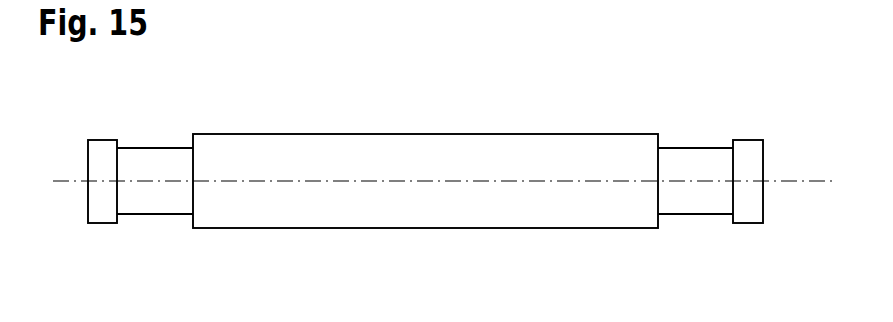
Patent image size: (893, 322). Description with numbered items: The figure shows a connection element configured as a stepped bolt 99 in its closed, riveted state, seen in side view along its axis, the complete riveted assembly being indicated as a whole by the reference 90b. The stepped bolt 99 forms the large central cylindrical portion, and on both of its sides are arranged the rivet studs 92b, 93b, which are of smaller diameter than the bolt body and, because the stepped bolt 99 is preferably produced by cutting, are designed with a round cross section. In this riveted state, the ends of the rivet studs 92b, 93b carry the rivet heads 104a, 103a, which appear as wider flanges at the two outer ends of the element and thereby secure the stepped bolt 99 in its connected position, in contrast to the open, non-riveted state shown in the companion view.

The roller 90b is at (492, 110).
The stepped bolt 99 is at (285, 147).
The rivet stud 92b is at (163, 162).
The rivet stud 93b is at (687, 160).
The rivet head 104a is at (100, 153).
The rivet head 103a is at (745, 152).